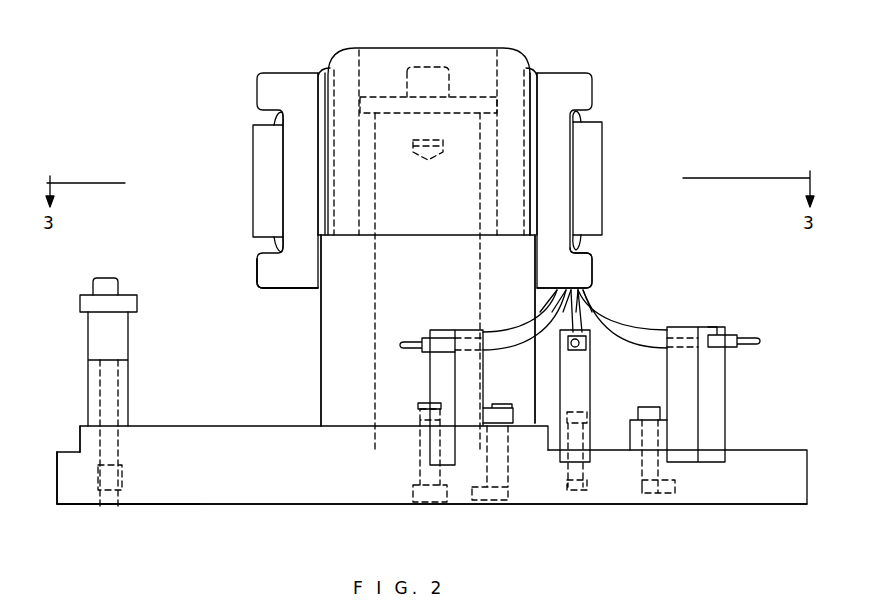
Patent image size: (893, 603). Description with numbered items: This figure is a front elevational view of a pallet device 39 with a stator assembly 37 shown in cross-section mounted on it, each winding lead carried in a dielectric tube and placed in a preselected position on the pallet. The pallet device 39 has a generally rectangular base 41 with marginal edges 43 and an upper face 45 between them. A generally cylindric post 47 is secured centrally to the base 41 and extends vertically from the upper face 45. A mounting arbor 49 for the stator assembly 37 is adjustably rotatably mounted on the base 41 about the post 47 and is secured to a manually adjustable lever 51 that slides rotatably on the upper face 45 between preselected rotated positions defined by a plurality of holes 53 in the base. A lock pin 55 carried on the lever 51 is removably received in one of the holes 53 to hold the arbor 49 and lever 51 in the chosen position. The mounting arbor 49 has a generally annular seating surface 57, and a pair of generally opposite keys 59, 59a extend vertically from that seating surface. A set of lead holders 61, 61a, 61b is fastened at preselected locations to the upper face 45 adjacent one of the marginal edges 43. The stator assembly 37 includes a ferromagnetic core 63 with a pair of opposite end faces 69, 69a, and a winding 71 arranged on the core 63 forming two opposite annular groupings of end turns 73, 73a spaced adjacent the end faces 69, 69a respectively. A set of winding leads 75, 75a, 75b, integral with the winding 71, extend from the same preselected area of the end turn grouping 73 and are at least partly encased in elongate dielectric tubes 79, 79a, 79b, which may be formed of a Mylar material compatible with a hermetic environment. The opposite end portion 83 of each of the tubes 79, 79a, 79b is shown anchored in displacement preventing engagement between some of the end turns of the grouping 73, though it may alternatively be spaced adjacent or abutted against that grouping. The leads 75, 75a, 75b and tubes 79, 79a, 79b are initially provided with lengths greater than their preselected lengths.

The stator assembly 37 is at (603, 52).
The pallet device 39 is at (183, 505).
The base 41 is at (745, 448).
The marginal edges 43 is at (57, 496).
The upper face 45 is at (70, 452).
The post 47 is at (432, 271).
The mounting arbor 49 is at (505, 52).
The manually adjustable lever 51 is at (220, 430).
The holes 53 is at (100, 502).
The lock pin 55 is at (128, 350).
The seating surface 57 is at (350, 237).
The key 59 is at (320, 72).
The key 59a is at (540, 72).
The lead holder 61 is at (430, 386).
The lead holder 61a is at (588, 382).
The lead holder 61b is at (722, 381).
The core 63 is at (258, 147).
The end face 69 is at (595, 236).
The end face 69a is at (593, 120).
The winding 71 is at (252, 255).
The end turn grouping 73 is at (285, 280).
The end turn grouping 73a is at (272, 78).
The winding lead 75 is at (413, 340).
The winding lead 75a is at (580, 348).
The winding lead 75b is at (750, 338).
The dielectric material tube 79 is at (512, 333).
The dielectric material tube 79a is at (586, 322).
The dielectric material tube 79b is at (642, 332).
The opposite end portion 83 is at (582, 292).